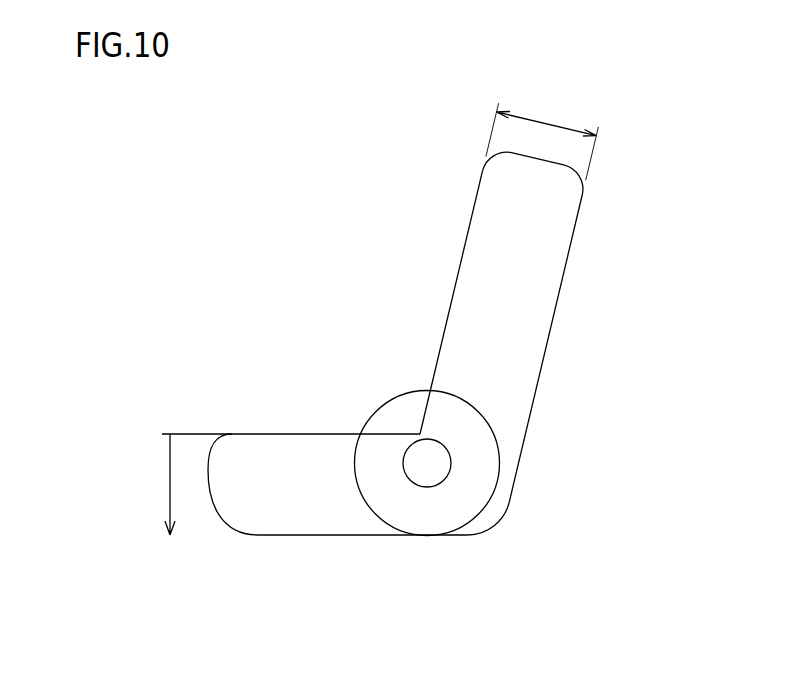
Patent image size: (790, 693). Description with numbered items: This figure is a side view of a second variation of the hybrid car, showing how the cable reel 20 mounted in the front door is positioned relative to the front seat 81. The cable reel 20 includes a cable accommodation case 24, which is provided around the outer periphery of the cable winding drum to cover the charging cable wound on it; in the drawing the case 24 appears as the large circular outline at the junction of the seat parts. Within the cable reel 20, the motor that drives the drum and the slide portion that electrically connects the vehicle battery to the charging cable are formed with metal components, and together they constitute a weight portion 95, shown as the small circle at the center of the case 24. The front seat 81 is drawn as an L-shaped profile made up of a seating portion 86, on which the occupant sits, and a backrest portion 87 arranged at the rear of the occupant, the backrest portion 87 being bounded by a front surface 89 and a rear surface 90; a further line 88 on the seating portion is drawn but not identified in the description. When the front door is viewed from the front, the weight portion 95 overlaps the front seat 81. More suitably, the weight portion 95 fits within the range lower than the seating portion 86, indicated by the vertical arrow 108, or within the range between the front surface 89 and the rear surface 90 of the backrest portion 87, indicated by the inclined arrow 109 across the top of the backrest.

The cable reel 20 is at (406, 362).
The cable accommodation case 24 is at (372, 414).
The front seat 81 is at (470, 181).
The seating portion 86 is at (312, 512).
The backrest portion 87 is at (524, 333).
The upper surface of seat cushion portion 88 is at (277, 433).
The front surface 89 is at (455, 290).
The rear surface 90 is at (538, 383).
The weight portion 95 is at (427, 487).
The arrow 108 is at (170, 478).
The arrow 109 is at (546, 122).